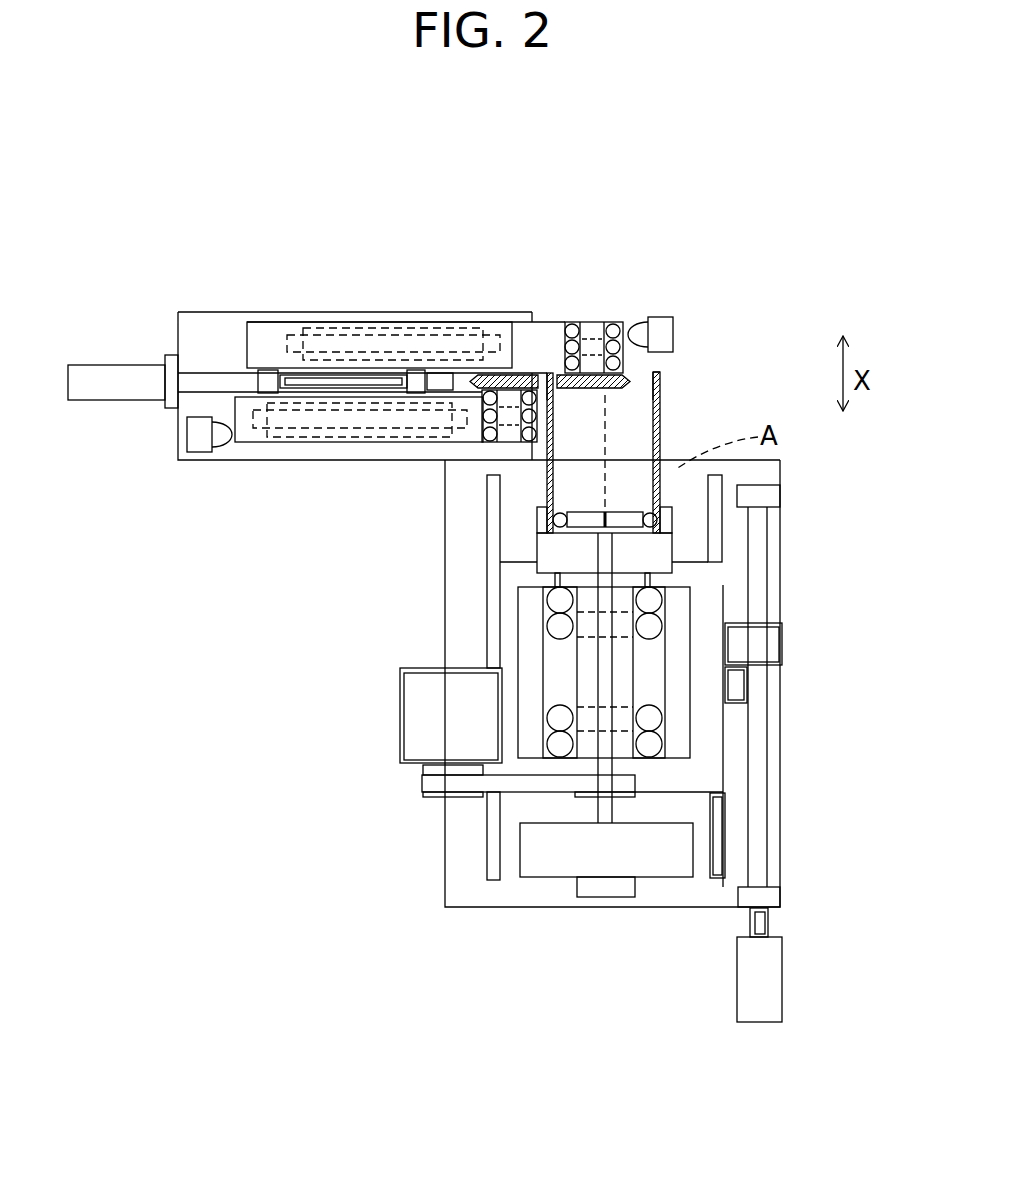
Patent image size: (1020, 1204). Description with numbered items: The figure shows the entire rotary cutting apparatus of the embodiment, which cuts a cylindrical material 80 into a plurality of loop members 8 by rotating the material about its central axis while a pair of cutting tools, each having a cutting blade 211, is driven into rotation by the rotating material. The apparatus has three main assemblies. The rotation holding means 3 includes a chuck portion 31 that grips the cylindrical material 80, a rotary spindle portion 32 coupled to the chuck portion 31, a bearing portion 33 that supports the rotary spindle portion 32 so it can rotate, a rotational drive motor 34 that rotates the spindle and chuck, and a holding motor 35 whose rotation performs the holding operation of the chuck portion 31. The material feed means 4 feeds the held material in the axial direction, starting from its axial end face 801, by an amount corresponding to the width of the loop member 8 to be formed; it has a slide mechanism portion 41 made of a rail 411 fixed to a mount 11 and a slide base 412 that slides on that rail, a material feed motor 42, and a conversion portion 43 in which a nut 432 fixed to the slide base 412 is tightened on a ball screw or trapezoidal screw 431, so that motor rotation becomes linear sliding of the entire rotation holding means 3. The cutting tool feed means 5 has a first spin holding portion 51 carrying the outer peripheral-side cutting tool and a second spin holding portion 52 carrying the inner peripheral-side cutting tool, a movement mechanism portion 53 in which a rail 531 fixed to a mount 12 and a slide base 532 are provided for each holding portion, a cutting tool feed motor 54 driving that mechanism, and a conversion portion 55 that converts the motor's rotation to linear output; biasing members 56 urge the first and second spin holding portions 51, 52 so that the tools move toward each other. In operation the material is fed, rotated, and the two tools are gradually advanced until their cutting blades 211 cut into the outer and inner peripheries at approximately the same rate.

The cutting blade 211 is at (547, 378).
The rotation holding means 3 is at (702, 775).
The material feed means 4 is at (722, 926).
The cutting tool feed means 5 is at (302, 311).
The loop member 8 is at (663, 381).
The cylindrical material 80 is at (660, 428).
The axial end face 801 is at (656, 372).
The mount 11 is at (467, 888).
The mount 12 is at (235, 337).
The chuck portion 31 is at (557, 552).
The rotary spindle portion 32 is at (607, 747).
The bearing portion 33 is at (535, 648).
The rotational drive motor 34 is at (562, 852).
The holding motor 35 is at (423, 717).
The slide mechanism portion 41 is at (731, 603).
The rail 411 is at (715, 537).
The slide base 412 is at (700, 713).
The material feed motor 42 is at (765, 985).
The conversion portion 43 is at (774, 803).
The ball screw 431 is at (757, 757).
The nut 432 is at (757, 642).
The first spin holding portion 51 is at (367, 438).
The second spin holding portion 52 is at (413, 328).
The movement mechanism portion 53 is at (372, 329).
The rail 531 is at (325, 437).
The slide base 532 is at (273, 437).
The cutting tool feed motor 54 is at (117, 377).
The conversion portion 55 is at (217, 382).
The biasing member 56 is at (661, 317).